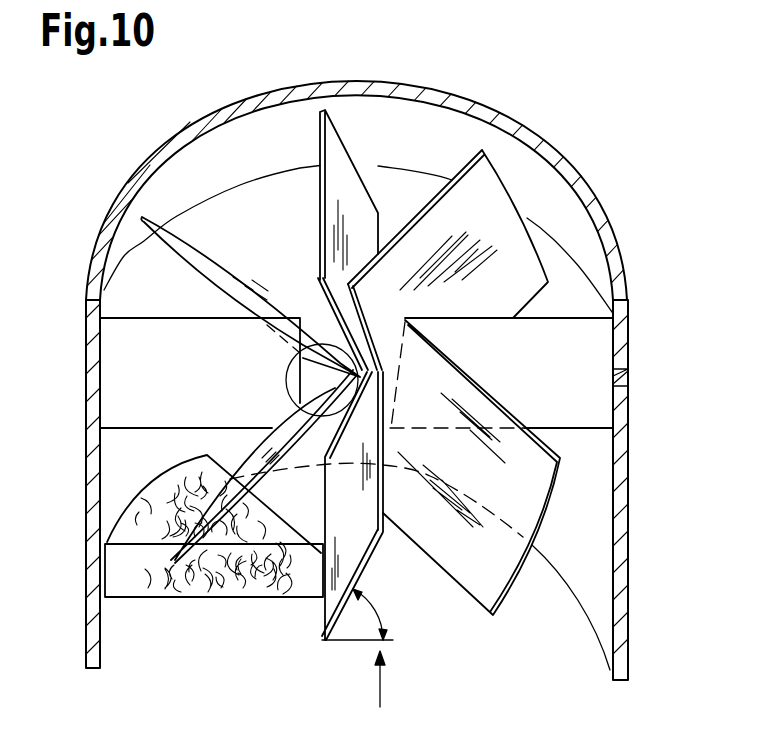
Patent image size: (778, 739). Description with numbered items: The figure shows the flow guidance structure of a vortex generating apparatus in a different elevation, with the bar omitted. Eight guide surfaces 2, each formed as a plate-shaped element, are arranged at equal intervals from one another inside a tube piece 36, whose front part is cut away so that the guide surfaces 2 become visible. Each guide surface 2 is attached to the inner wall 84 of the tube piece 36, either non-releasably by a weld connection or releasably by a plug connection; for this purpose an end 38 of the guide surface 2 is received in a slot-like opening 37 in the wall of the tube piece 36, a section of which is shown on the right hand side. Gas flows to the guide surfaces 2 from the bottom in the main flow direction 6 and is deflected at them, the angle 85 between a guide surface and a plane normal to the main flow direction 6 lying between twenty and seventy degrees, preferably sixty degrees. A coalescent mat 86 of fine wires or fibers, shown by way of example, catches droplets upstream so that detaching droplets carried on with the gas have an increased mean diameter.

The guide surface 2 is at (483, 203).
The main flow direction 6 is at (380, 688).
The tube piece 36 is at (628, 532).
The slot-like opening 37 is at (628, 377).
The end of the guide surface 38 is at (503, 600).
The inner wall 84 is at (208, 175).
The angle 85 is at (372, 607).
The mat 86 is at (118, 580).